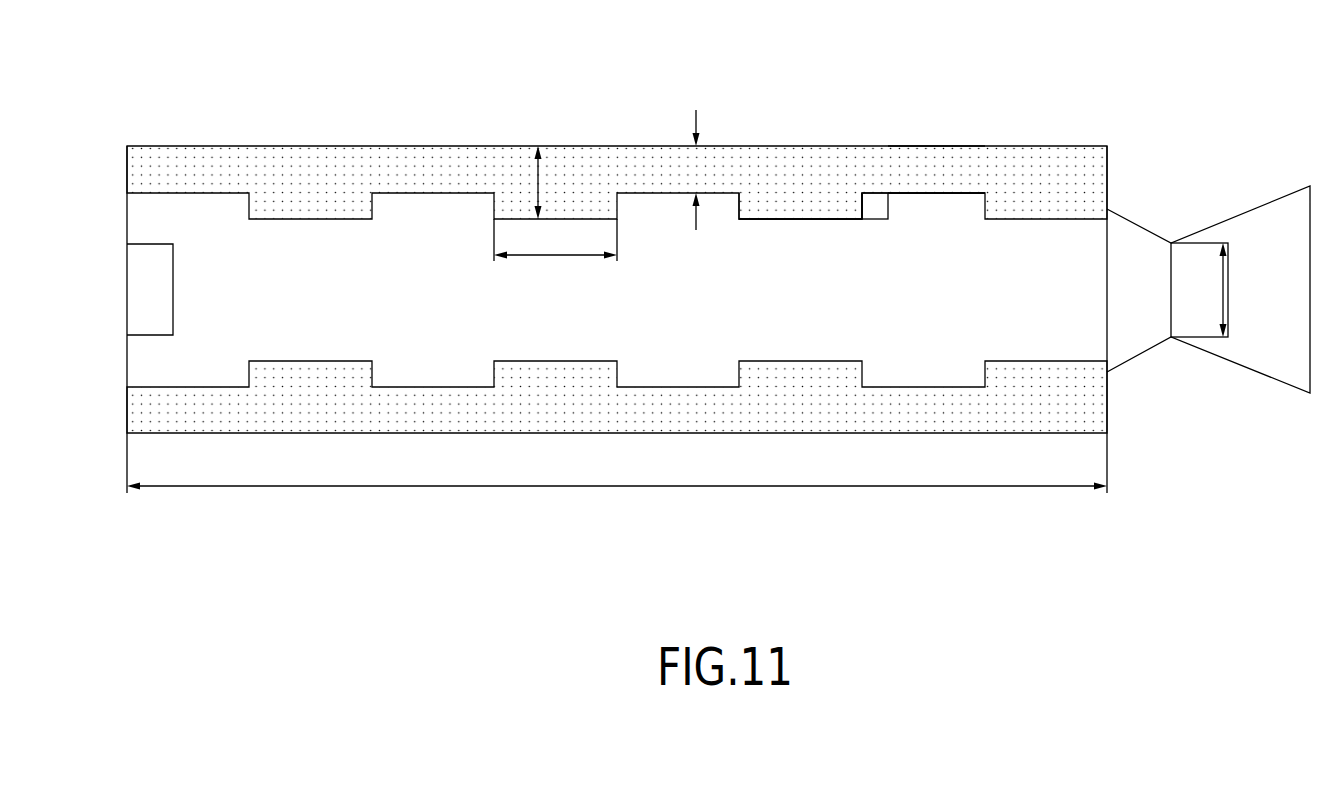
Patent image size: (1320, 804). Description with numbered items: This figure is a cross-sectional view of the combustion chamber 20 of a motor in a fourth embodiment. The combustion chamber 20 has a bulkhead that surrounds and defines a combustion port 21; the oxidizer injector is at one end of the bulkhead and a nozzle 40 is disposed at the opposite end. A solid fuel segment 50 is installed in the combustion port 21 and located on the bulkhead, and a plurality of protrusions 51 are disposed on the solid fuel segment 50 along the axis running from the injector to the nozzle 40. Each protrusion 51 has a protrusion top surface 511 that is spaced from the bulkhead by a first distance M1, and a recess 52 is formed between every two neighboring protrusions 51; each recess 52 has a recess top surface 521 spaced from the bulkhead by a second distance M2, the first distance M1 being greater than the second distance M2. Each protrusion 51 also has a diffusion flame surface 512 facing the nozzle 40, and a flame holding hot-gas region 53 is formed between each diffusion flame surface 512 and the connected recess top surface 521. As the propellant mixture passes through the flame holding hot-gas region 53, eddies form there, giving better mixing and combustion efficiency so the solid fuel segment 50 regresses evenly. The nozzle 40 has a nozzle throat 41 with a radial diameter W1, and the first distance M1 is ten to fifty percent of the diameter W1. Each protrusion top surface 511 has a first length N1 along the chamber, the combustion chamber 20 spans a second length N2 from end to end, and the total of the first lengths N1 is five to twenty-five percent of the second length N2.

The combustion chamber 20 is at (320, 135).
The combustion port 21 is at (236, 253).
The solid fuel segment 50 is at (621, 156).
The protrusion 51 is at (785, 203).
The protrusion top surface 511 is at (802, 219).
The diffusion flame surface 512 is at (862, 204).
The recess 52 is at (940, 172).
The recess top surface 521 is at (952, 193).
The flame holding hot-gas region 53 is at (875, 207).
The first distance M1 is at (537, 182).
The second distance M2 is at (696, 158).
The first length N1 is at (559, 255).
The second length N2 is at (365, 486).
The nozzle 40 is at (1210, 212).
The nozzle throat 41 is at (1169, 273).
The diameter W1 is at (1223, 290).